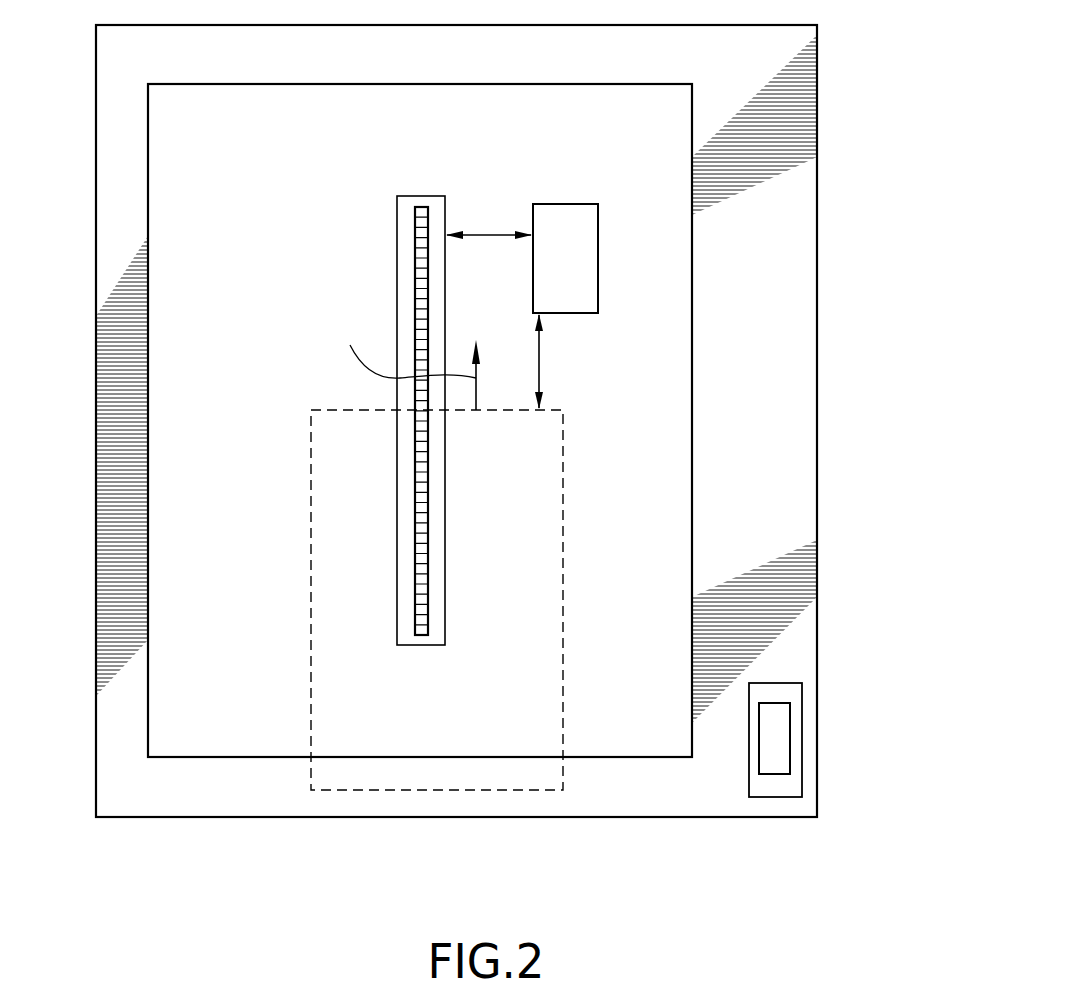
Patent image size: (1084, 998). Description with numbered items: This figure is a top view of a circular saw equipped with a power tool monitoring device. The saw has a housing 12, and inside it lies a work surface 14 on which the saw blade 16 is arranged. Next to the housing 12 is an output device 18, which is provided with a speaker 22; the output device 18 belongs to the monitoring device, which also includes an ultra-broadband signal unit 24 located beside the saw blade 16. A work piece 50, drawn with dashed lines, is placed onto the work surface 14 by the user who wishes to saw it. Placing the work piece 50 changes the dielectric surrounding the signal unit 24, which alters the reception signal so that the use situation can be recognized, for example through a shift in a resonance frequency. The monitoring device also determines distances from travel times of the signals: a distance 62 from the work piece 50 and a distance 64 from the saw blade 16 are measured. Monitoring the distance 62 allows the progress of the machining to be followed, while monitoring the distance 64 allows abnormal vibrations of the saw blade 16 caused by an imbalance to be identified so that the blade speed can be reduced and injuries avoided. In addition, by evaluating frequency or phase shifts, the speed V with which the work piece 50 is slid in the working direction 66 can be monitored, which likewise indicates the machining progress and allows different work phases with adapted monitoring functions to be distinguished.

The housing 12 is at (817, 82).
The work surface 14 is at (693, 480).
The saw blade 16 is at (421, 207).
The output device 18 is at (780, 798).
The speaker 22 is at (790, 745).
The ultra-broadband signal unit 24 is at (598, 252).
The work piece 50 is at (462, 790).
The distance from the work piece 62 is at (540, 365).
The distance from the saw blade 64 is at (480, 233).
The working direction 66 is at (476, 390).